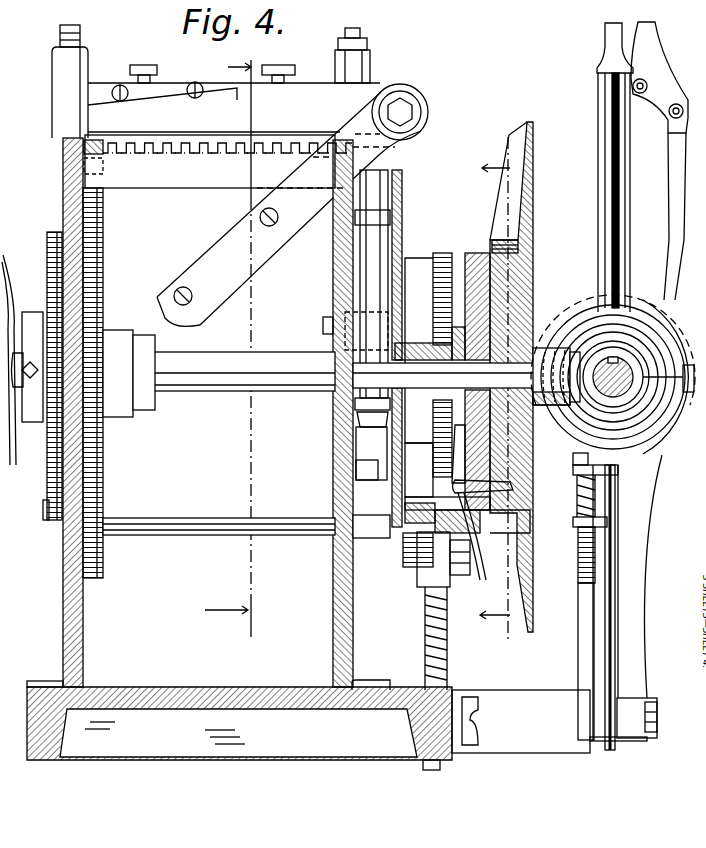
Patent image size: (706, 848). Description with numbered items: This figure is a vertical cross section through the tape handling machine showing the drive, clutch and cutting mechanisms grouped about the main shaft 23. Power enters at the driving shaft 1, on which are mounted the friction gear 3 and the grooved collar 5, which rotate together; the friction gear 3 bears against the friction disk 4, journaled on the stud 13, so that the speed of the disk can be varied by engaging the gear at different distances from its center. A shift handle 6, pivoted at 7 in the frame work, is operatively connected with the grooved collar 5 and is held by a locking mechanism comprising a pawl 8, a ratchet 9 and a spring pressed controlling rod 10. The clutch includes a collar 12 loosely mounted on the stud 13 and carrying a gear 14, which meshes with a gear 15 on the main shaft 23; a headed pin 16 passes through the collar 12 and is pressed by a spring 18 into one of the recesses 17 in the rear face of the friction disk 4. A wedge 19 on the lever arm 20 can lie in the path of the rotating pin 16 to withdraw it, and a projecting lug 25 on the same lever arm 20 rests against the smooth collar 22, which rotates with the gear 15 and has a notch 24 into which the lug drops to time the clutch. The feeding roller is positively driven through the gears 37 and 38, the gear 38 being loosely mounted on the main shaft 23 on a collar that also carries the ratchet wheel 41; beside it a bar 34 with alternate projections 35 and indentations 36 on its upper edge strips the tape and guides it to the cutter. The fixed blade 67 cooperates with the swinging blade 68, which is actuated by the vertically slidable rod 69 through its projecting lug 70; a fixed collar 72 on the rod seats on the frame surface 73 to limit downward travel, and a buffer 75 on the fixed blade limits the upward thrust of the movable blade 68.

The driving shaft 1 is at (630, 387).
The friction gear 3 is at (576, 318).
The friction disk 4 is at (532, 190).
The grooved collar 5 is at (637, 358).
The shift handle 6 is at (608, 128).
The pivot 7 is at (650, 702).
The pawl 8 is at (580, 530).
The ratchet 9 is at (578, 575).
The spring pressed controlling rod 10 is at (669, 207).
The collar 12 is at (475, 255).
The stud 13 is at (525, 318).
The gear 14 is at (433, 347).
The gear 15 is at (445, 250).
The headed pin 16 is at (513, 493).
The recesses 17 is at (12, 272).
The spring 18 is at (433, 445).
The wedge 19 is at (490, 523).
The lever arm 20 is at (476, 503).
The smooth collar 22 is at (423, 246).
The main shaft 23 is at (168, 385).
The notch 24 is at (15, 429).
The projecting lug 25 is at (370, 493).
The bar 34 is at (138, 178).
The projections 35 is at (195, 155).
The indentations 36 is at (214, 155).
The gear 37 is at (63, 150).
The gear 38 is at (104, 257).
The ratchet wheel 41 is at (53, 522).
The fixed blade 67 is at (348, 100).
The swinging blade 68 is at (251, 277).
The vertically slidable rod 69 is at (385, 235).
The projecting lug 70 is at (345, 323).
The fixed collar 72 is at (353, 403).
The surface 73 is at (353, 422).
The buffer 75 is at (100, 92).